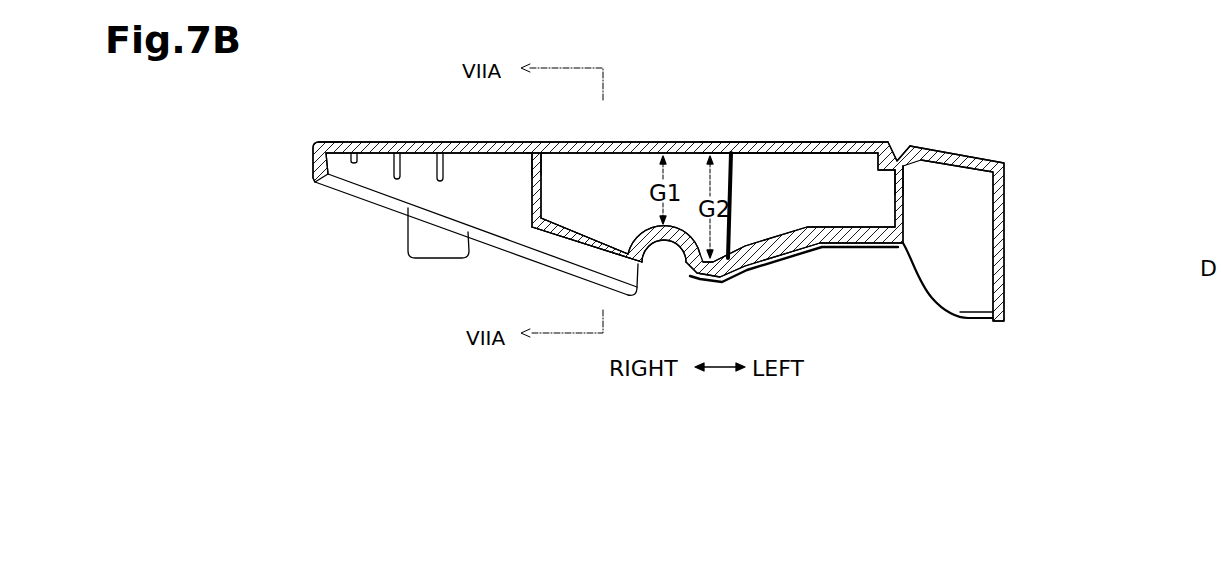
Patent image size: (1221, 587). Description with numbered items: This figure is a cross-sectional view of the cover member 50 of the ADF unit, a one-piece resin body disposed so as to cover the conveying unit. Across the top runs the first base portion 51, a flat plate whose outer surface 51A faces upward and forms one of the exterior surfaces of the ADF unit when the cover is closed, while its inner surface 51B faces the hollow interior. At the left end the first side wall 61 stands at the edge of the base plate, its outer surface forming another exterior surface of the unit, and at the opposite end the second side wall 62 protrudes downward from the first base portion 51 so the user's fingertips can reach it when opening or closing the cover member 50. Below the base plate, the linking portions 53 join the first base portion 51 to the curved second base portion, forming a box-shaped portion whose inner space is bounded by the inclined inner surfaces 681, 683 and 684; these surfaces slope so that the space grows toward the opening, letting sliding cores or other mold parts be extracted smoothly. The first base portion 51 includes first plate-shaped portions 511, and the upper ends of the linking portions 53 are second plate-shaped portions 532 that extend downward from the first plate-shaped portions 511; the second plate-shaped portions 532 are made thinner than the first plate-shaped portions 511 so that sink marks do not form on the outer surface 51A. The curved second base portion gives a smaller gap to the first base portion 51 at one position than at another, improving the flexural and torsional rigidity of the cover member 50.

The cover member 50 is at (963, 145).
The first base portion 51 is at (738, 145).
The outer surface 51A is at (768, 142).
The inner surface 51B is at (766, 155).
The first plate-shaped portion 511 is at (536, 151).
The linking portion 53 is at (520, 244).
The second plate-shaped portion 532 is at (532, 156).
The first side wall 61 is at (1005, 222).
The second side wall 62 is at (313, 168).
The inner surface of box-shaped portion 681 is at (541, 210).
The inner surface of box-shaped portion 683 is at (893, 205).
The inner surface of box-shaped portion 684 is at (589, 236).